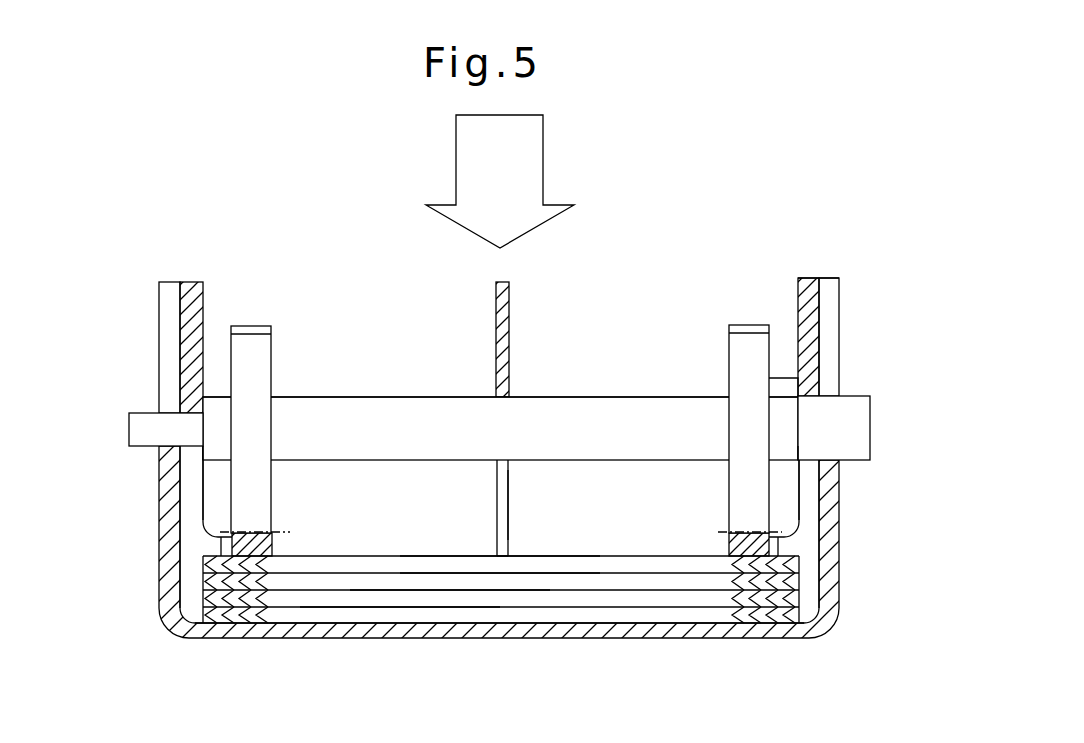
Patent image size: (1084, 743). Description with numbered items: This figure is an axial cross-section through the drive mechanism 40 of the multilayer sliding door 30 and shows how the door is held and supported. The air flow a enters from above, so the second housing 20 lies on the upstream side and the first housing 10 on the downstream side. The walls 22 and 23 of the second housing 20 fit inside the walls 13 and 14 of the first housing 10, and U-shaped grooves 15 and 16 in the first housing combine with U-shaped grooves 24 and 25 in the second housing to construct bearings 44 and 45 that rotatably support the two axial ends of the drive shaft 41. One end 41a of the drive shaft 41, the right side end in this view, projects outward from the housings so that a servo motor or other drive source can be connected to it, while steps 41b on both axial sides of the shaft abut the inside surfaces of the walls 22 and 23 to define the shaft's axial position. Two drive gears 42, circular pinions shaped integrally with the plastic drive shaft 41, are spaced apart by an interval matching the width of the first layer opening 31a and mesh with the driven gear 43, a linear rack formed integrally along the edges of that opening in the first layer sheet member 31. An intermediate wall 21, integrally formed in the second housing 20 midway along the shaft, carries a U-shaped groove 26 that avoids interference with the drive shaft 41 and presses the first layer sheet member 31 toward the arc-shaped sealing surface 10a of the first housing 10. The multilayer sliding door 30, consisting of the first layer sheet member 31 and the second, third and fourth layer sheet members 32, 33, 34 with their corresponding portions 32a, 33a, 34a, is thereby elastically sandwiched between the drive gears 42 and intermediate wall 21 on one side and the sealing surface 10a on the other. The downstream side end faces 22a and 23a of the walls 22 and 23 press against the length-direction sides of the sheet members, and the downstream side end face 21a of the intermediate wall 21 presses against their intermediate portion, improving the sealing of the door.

The air flow a is at (535, 145).
The first housing 10 is at (858, 608).
The sealing surface 10a is at (774, 623).
The wall 13 is at (828, 520).
The wall 14 is at (170, 517).
The U-shaped groove 15 is at (830, 290).
The U-shaped groove 16 is at (168, 318).
The second housing 20 is at (792, 266).
The intermediate wall 21 is at (502, 325).
The downstream side end face of intermediate wall 21a is at (513, 555).
The wall 22 is at (810, 287).
The downstream side end face 22a is at (797, 538).
The wall 23 is at (188, 282).
The downstream side end face 23a is at (217, 540).
The U-shaped groove 24 is at (807, 493).
The U-shaped groove 25 is at (192, 480).
The U-shaped groove 26 is at (505, 493).
The multilayer sliding door 30 is at (399, 544).
The first layer sheet member 31 is at (203, 563).
The first layer opening 31a is at (492, 562).
The second layer sheet member 32 is at (203, 583).
The central portion of second layer 32a is at (452, 582).
The third layer sheet member 33 is at (222, 600).
The central portion of third layer 33a is at (405, 598).
The fourth layer sheet member 34 is at (250, 618).
The central portion of fourth layer 34a is at (348, 614).
The drive mechanism 40 is at (372, 386).
The drive shaft 41 is at (665, 400).
The end of drive shaft 41a is at (863, 427).
The steps 41b is at (200, 455).
The drive gear 42 is at (255, 325).
The driven gear 43 is at (285, 532).
The bearing 44 is at (823, 389).
The bearing 45 is at (182, 412).